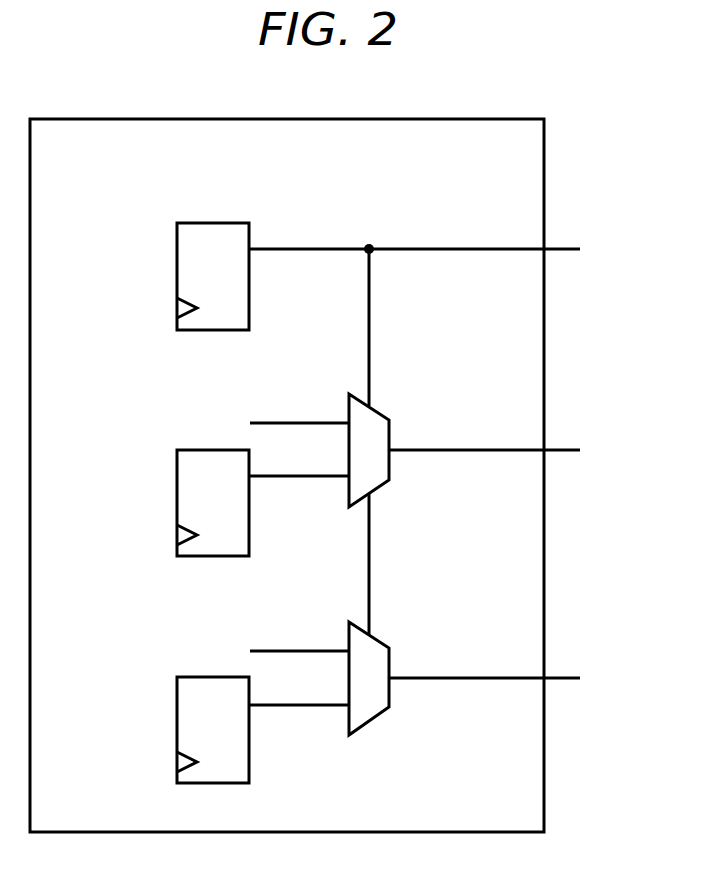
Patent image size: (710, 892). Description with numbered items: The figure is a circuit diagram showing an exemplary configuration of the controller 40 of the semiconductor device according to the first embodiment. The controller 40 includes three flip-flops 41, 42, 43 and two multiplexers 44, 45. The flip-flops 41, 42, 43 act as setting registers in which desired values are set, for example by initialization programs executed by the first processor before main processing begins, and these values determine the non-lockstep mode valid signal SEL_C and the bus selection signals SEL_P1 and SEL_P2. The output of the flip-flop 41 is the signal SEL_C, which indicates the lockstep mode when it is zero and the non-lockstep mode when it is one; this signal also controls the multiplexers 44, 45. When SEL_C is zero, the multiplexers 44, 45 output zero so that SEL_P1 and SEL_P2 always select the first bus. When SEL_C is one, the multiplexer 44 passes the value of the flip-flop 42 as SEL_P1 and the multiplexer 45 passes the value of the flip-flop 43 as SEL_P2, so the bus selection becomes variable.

The controller 40 is at (78, 165).
The flip-flop 41 is at (177, 262).
The flip-flop 42 is at (177, 474).
The flip-flop 43 is at (177, 720).
The multiplexer 44 is at (388, 420).
The multiplexer 45 is at (388, 648).